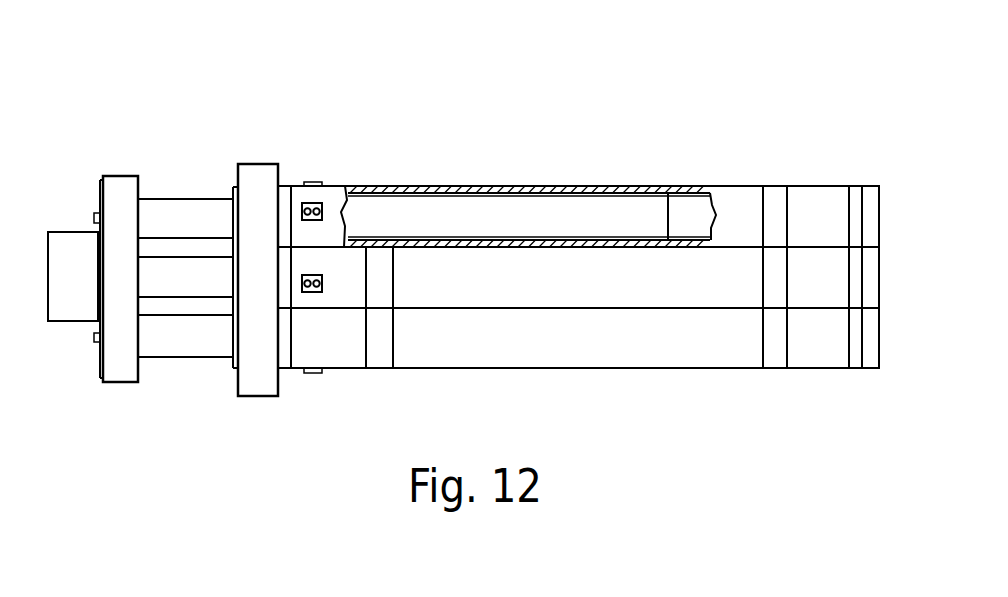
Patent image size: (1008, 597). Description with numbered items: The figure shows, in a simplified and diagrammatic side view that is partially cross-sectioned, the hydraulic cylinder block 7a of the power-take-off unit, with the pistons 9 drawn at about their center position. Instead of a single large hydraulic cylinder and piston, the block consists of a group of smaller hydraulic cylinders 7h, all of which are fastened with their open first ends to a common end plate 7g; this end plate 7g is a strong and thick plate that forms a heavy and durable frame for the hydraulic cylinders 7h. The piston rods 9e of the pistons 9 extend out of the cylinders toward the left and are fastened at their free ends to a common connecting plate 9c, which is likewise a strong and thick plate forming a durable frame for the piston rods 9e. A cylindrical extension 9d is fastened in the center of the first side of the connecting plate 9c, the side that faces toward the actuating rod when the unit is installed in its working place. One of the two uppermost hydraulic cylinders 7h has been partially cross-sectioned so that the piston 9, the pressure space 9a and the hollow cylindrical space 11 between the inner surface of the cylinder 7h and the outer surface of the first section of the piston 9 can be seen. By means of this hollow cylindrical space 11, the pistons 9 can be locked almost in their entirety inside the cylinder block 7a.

The hydraulic cylinder block 7a is at (580, 105).
The end plate 7g is at (258, 172).
The hydraulic cylinders 7h is at (392, 186).
The pistons 9 is at (614, 200).
The pressure space 9a is at (694, 200).
The connecting plate 9c is at (117, 176).
The cylindrical extension 9d is at (78, 315).
The piston rods 9e is at (187, 199).
The hollow cylindrical space 11 is at (497, 186).